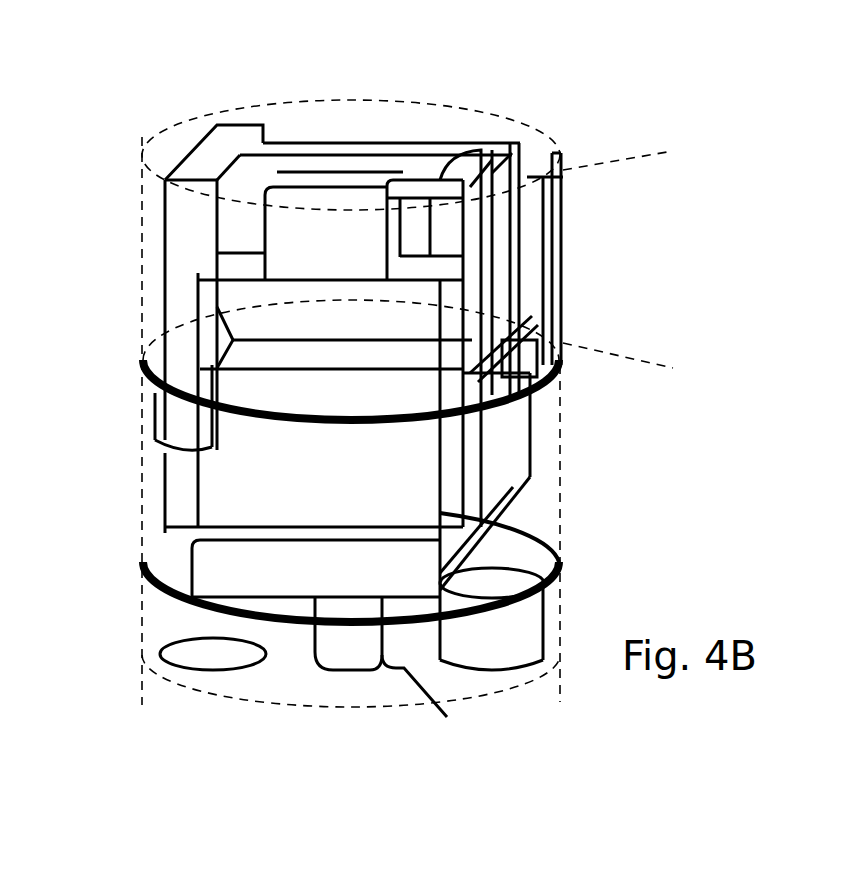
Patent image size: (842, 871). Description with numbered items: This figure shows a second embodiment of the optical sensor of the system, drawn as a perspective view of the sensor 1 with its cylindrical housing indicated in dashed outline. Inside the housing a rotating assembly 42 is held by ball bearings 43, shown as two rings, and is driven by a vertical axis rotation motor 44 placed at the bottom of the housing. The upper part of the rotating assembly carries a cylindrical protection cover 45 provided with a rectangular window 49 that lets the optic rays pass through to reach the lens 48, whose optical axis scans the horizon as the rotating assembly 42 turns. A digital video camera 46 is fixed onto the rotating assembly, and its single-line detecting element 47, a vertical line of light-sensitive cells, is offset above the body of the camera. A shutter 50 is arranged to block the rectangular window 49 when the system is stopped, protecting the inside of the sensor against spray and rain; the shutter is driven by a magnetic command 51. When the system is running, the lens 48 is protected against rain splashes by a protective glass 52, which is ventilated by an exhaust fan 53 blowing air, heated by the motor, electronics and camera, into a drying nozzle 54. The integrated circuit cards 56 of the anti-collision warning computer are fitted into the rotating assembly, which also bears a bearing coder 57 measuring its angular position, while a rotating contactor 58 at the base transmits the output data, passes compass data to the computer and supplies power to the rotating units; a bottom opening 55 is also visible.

The device housing 1 is at (150, 610).
The rotating assembly 42 is at (163, 345).
The ball bearings 43 is at (142, 372).
The vertical axis rotation motor 44 is at (517, 650).
The cylindrical protection cover 45 is at (143, 180).
The digital video camera 46 is at (513, 440).
The single-line detecting element 47 is at (162, 238).
The lens 48 is at (245, 132).
The rectangular window 49 is at (567, 220).
The shutter 50 is at (565, 292).
The magnetic command 51 is at (567, 377).
The protective glass 52 is at (523, 170).
The exhaust fan 53 is at (335, 172).
The drying nozzle 54 is at (418, 185).
The bottom opening 55 is at (207, 657).
The integrated circuit cards 56 is at (490, 170).
The bearing coder 57 is at (167, 437).
The rotating contactor 58 is at (367, 670).